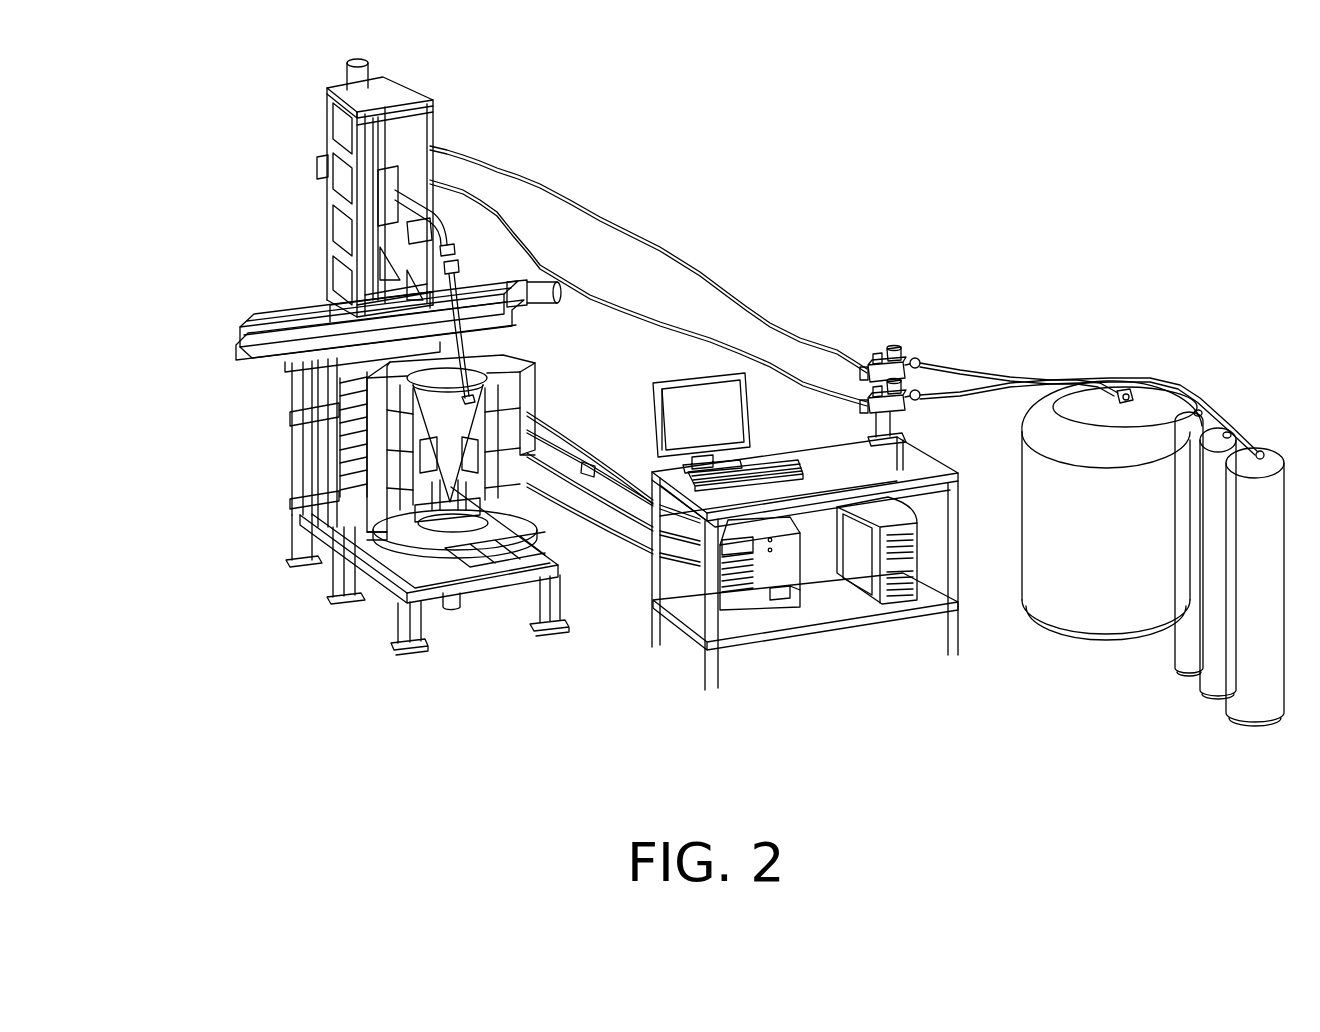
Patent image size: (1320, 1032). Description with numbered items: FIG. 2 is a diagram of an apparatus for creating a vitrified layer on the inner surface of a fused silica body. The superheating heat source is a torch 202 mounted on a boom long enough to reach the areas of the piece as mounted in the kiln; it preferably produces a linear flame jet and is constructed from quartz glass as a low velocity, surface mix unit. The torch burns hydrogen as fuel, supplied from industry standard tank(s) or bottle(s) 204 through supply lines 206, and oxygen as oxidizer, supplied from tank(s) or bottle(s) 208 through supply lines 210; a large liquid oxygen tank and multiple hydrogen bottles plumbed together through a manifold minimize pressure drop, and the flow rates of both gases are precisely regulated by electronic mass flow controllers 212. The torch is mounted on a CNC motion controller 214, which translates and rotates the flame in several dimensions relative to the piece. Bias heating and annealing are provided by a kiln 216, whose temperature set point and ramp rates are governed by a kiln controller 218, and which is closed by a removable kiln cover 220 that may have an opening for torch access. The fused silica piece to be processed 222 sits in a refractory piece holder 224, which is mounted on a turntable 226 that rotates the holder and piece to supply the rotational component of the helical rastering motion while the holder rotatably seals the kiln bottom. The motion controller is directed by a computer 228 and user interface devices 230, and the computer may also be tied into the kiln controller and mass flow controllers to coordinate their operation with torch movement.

The torch 202 is at (515, 289).
The hydrogen tank(s) or bottle(s) 204 is at (1205, 697).
The hydrogen supply lines 206 is at (658, 248).
The oxygen tank(s) or bottle(s) 208 is at (1063, 633).
The oxygen supply lines 210 is at (615, 308).
The electronic mass flow controllers 212 is at (912, 390).
The CNC motion controller 214 is at (303, 307).
The kiln 216 is at (345, 428).
The kiln controller 218 is at (763, 577).
The kiln cover 220 is at (378, 377).
The fused silica piece to be processed 222 is at (297, 503).
The piece holder 224 is at (400, 520).
The turntable 226 is at (453, 523).
The computer 228 is at (850, 557).
The user interface devices 230 is at (787, 468).